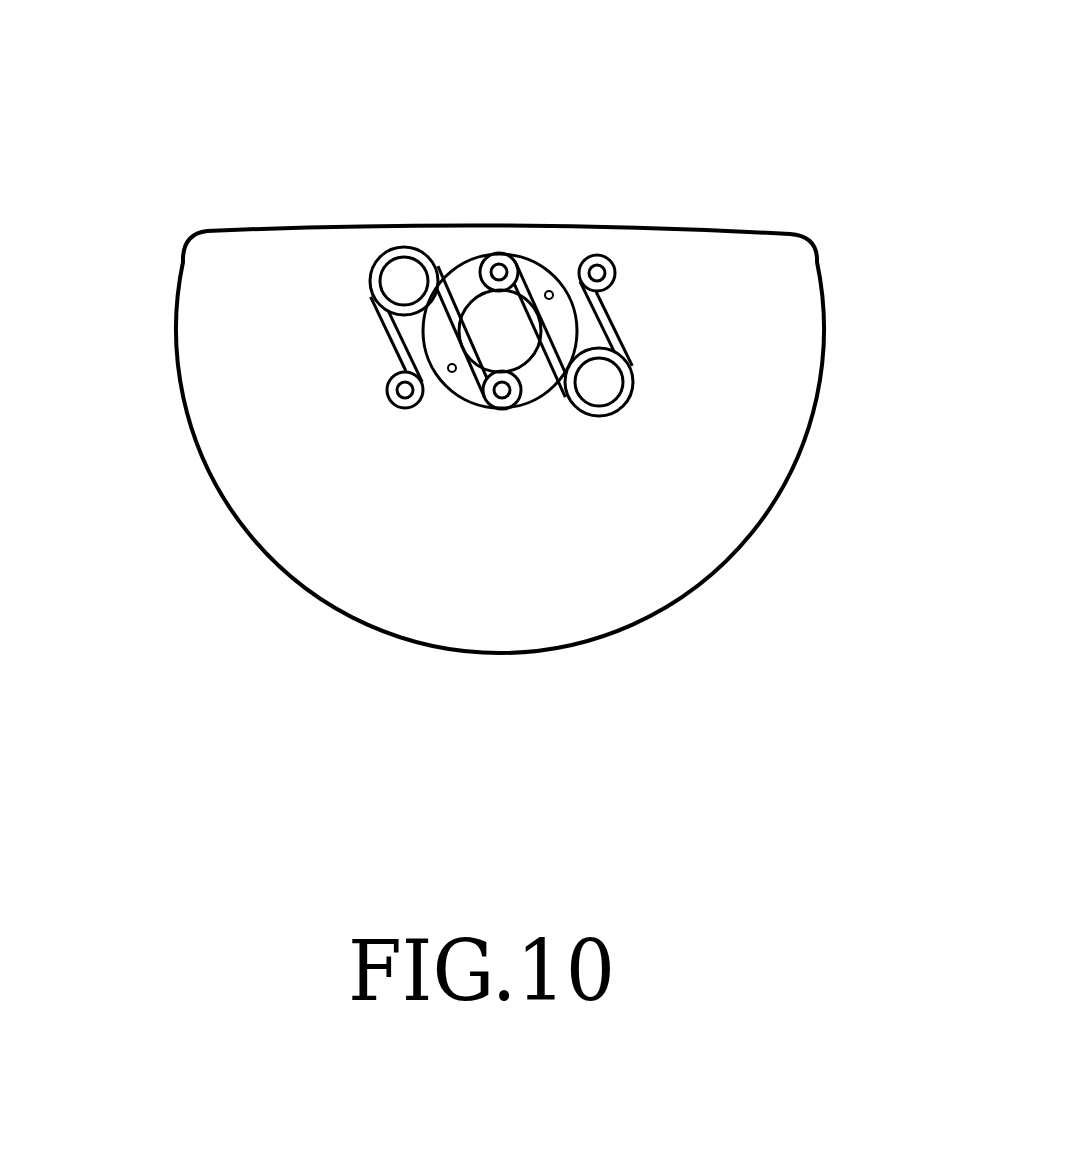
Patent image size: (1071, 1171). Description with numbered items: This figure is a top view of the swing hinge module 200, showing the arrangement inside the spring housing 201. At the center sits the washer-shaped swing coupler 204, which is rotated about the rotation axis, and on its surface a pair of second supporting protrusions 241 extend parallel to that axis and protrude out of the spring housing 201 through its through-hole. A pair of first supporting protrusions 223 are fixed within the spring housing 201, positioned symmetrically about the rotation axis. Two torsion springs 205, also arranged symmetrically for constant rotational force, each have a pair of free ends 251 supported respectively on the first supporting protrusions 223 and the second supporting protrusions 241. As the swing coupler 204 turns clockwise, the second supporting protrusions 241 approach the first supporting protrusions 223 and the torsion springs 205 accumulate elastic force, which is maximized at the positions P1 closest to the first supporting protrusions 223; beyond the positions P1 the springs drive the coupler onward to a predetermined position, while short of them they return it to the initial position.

The swing hinge module 200 is at (94, 117).
The spring housing 201 is at (762, 262).
The swing coupler 204 is at (558, 240).
The torsion springs 205 is at (380, 229).
The first supporting protrusions 223 is at (615, 273).
The second supporting protrusions 241 is at (500, 268).
The free ends 251 is at (441, 278).
The positions closest to the first supporting protrusions P1 is at (553, 295).